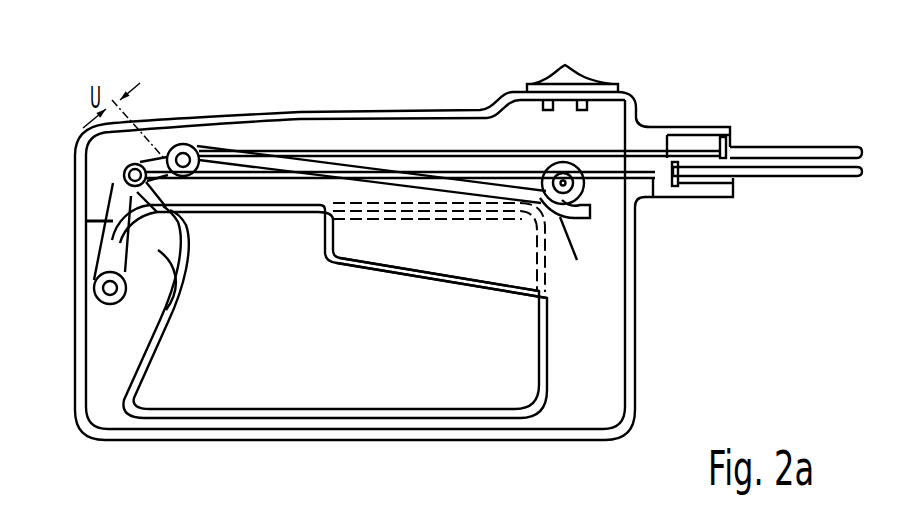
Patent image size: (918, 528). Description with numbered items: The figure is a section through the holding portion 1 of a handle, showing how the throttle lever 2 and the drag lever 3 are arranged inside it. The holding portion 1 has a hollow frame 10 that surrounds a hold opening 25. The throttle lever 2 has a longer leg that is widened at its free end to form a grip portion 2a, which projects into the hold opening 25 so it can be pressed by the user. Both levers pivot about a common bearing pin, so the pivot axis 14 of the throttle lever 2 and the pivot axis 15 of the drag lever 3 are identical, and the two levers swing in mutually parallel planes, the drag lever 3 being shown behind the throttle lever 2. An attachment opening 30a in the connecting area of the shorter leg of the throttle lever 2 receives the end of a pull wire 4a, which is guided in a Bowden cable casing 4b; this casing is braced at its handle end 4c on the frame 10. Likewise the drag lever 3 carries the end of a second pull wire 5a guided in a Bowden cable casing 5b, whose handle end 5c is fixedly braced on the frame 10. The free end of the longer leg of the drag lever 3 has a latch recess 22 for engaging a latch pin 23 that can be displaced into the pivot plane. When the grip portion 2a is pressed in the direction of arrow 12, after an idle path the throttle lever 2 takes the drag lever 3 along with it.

The holding portion 1 is at (212, 86).
The throttle lever 2 is at (367, 250).
The grip portion 2a is at (483, 266).
The drag lever 3 is at (276, 166).
The pull wire 4a is at (660, 193).
The Bowden cable casing 4b is at (848, 176).
The handle end 4c is at (697, 172).
The pull wire 5a is at (663, 136).
The Bowden cable casing 5b is at (848, 150).
The handle end 5c is at (741, 148).
The frame 10 is at (612, 328).
The arrow 12 is at (170, 257).
The pivot axis 14 is at (120, 292).
The pivot axis 15 is at (110, 288).
The latch recess 22 is at (570, 228).
The latch pin 23 is at (585, 192).
The hold opening 25 is at (330, 353).
The attachment opening 30a is at (113, 167).